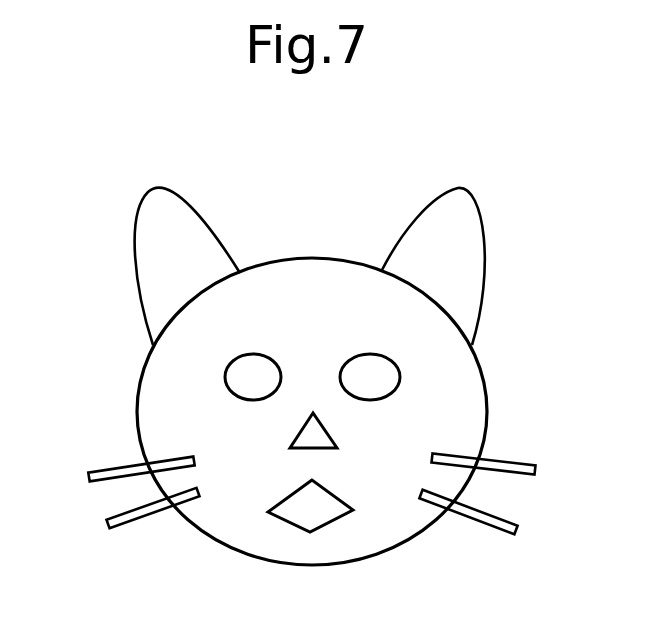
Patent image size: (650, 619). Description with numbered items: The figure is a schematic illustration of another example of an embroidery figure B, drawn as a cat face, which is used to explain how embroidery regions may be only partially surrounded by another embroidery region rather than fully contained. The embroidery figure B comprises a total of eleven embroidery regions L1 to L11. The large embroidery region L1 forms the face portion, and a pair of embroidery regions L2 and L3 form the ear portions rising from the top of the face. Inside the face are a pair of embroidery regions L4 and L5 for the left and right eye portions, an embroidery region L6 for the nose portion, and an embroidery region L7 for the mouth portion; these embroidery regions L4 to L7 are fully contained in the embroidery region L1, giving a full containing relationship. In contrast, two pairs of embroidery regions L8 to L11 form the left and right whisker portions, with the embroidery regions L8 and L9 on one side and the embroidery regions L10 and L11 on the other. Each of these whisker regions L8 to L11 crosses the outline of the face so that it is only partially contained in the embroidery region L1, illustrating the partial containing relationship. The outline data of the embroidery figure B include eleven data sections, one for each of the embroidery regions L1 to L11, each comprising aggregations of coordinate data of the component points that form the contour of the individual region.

The embroidery figure B is at (330, 220).
The embroidery region of the face portion L1 is at (145, 383).
The embroidery region of the ear portion L2 is at (177, 205).
The embroidery region of the ear portion L3 is at (468, 197).
The embroidery region of the left eye portion L4 is at (250, 360).
The embroidery region of the right eye portion L5 is at (368, 360).
The embroidery region of the nose portion L6 is at (329, 434).
The embroidery region of the mouth portion L7 is at (287, 500).
The embroidery region of the whisker portion L8 is at (520, 465).
The embroidery region of the whisker portion L9 is at (498, 533).
The embroidery region of the whisker portion L10 is at (123, 530).
The embroidery region of the whisker portion L11 is at (88, 477).